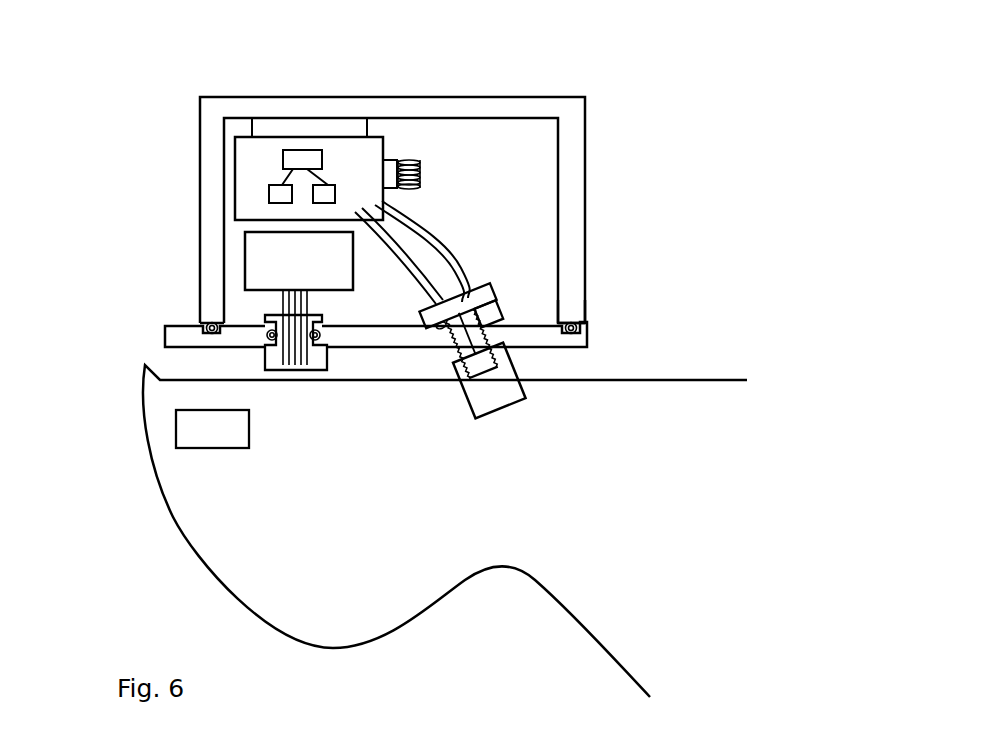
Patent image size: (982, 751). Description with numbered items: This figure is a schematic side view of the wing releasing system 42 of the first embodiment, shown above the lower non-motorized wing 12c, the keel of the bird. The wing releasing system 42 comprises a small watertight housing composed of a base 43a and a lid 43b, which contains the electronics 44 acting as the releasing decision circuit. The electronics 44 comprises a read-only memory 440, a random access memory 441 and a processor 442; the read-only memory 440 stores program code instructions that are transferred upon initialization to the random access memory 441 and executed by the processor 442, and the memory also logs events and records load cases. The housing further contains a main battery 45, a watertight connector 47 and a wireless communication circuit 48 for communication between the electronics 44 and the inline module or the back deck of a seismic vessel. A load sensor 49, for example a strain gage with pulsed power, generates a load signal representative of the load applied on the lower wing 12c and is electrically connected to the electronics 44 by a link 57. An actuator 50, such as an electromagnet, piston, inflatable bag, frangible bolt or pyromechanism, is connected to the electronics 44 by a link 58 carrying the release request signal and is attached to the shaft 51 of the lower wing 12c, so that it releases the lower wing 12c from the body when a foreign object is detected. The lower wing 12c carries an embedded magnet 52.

The lower wing 12c is at (403, 610).
The wing releasing system 42 is at (585, 112).
The base 43a is at (587, 336).
The lid 43b is at (578, 302).
The electronics 44 is at (245, 158).
The read-only memory 440 is at (266, 193).
The random access memory 441 is at (332, 182).
The processor 442 is at (291, 150).
The main battery 45 is at (258, 257).
The watertight connector 47 is at (315, 365).
The wireless communication circuit 48 is at (412, 160).
The load sensor 49 is at (491, 284).
The actuator 50 is at (500, 320).
The shaft 51 is at (492, 403).
The magnet 52 is at (207, 440).
The link 57 is at (427, 227).
The link 58 is at (427, 260).